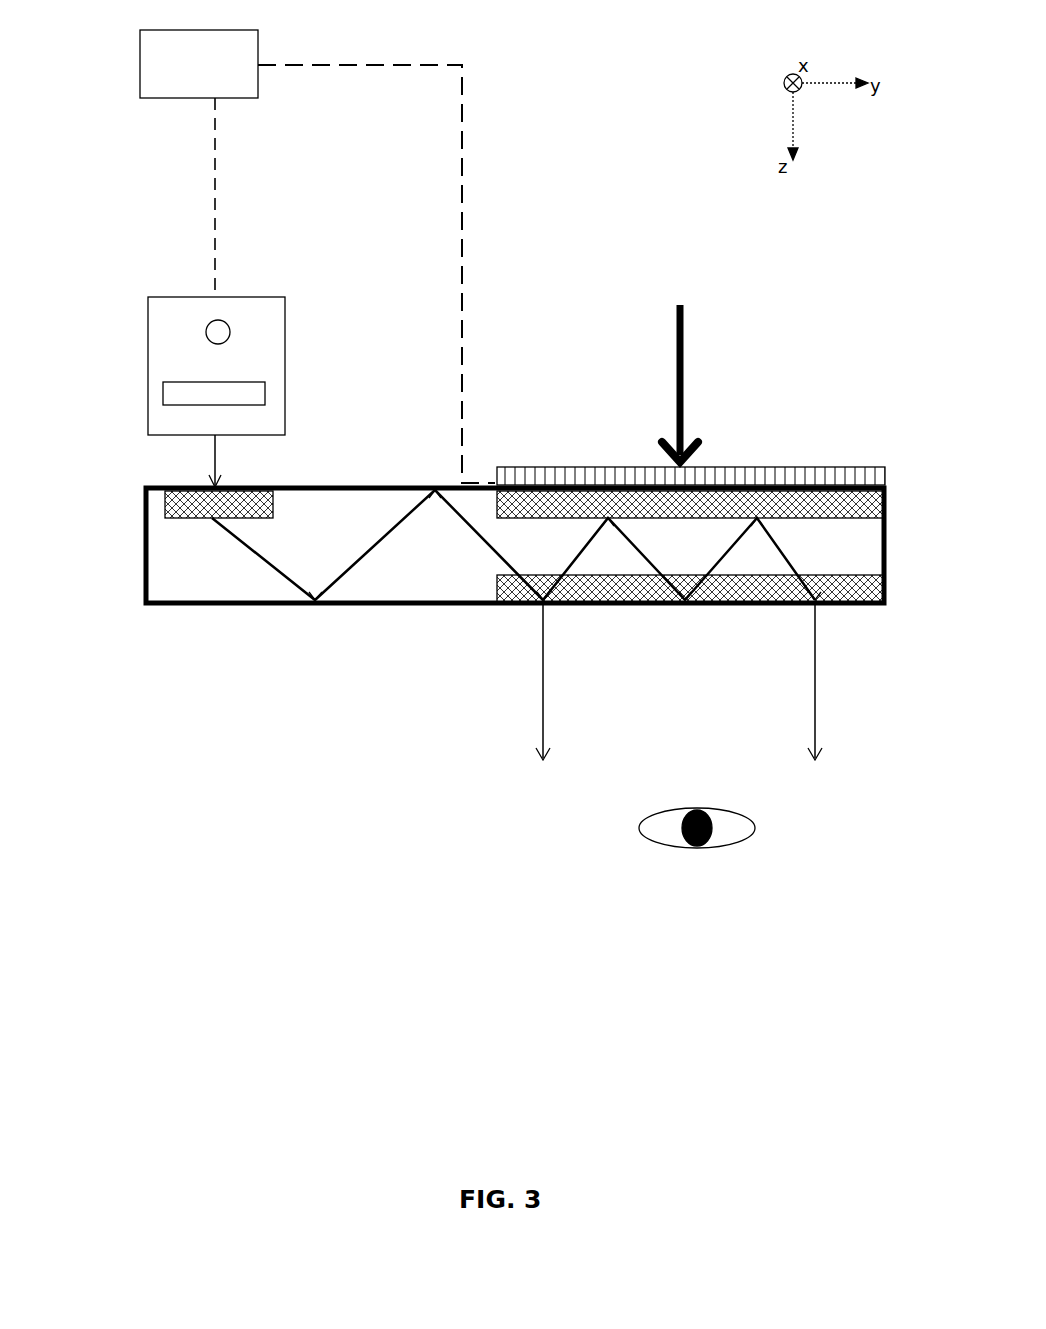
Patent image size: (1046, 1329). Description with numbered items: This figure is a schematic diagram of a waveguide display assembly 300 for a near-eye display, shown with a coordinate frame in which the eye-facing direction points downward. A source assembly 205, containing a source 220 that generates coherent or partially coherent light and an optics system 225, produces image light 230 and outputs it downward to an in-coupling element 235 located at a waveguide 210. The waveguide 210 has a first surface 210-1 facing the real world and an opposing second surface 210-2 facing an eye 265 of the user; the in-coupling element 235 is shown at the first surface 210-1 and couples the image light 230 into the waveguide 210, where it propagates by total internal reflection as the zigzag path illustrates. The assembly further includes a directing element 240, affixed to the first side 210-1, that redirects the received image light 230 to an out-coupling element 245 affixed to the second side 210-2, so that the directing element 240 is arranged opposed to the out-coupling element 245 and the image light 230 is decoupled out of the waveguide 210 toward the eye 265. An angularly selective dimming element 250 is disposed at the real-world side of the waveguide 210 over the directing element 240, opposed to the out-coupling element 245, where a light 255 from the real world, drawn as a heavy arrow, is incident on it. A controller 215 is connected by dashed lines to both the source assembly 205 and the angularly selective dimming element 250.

The waveguide display assembly 300 is at (80, 30).
The controller 215 is at (317, 256).
The source assembly 205 is at (148, 304).
The source 220 is at (230, 328).
The optics system 225 is at (265, 392).
The image light 230 is at (218, 460).
The waveguide 210 is at (145, 583).
The first surface 210-1 is at (332, 486).
The second surface 210-2 is at (206, 605).
The in-coupling element 235 is at (165, 502).
The directing element 240 is at (860, 511).
The out-coupling element 245 is at (858, 593).
The angularly selective dimming element 250 is at (848, 474).
The light from a real world 255 is at (684, 402).
The eye 265 is at (697, 847).